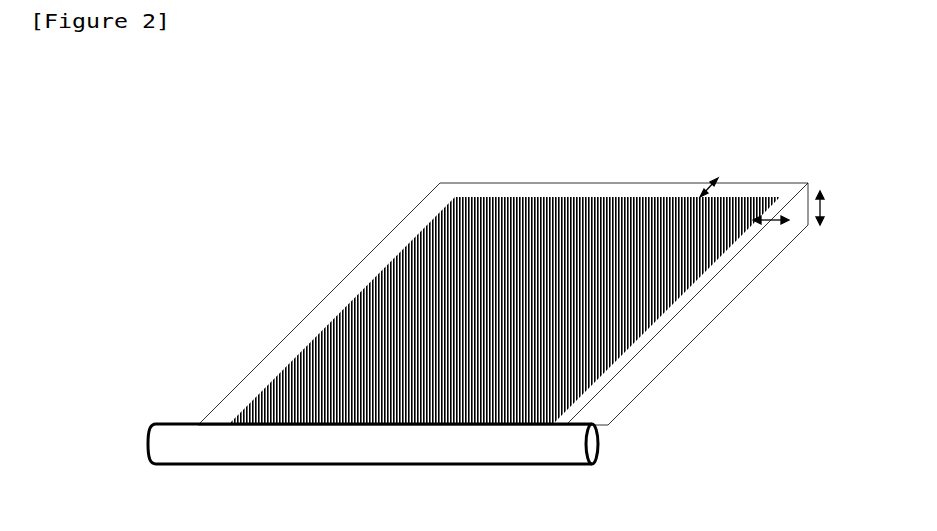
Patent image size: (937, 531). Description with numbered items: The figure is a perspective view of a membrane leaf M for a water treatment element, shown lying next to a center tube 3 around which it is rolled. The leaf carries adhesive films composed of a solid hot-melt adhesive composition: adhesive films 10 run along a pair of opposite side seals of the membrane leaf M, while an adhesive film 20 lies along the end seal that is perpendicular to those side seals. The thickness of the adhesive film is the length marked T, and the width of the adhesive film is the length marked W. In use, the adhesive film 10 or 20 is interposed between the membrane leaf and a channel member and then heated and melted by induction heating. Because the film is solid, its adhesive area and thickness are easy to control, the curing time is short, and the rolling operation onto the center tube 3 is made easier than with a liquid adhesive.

The adhesive film for end seal 20 is at (646, 184).
The adhesive films for side seals 10 is at (283, 337).
The center tube 3 is at (598, 446).
The membrane leaf M is at (500, 304).
The width W is at (717, 190).
The thickness T is at (837, 208).